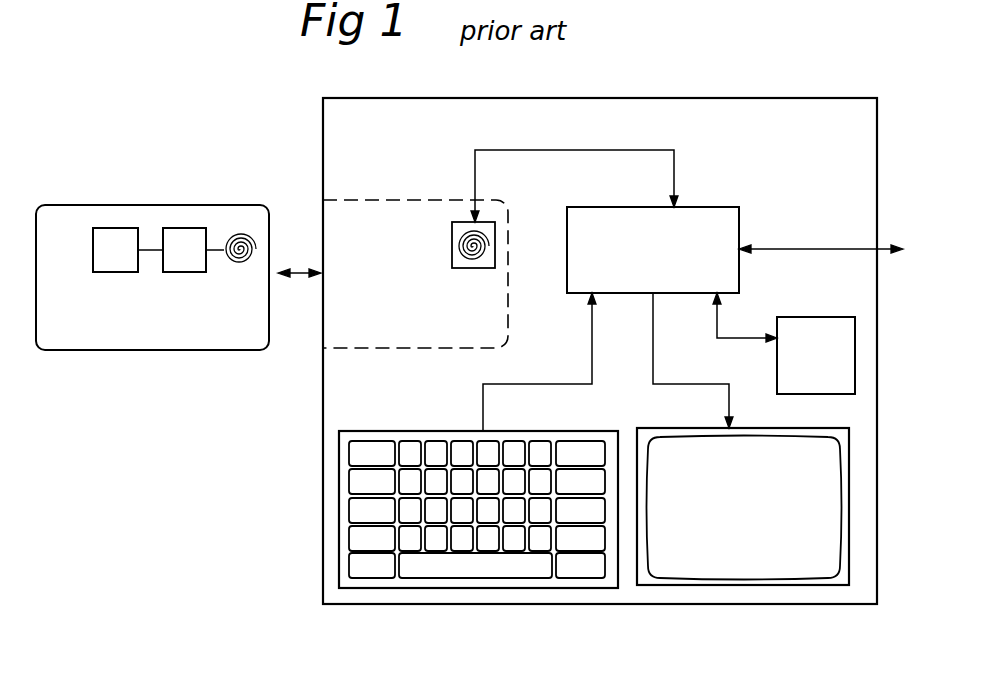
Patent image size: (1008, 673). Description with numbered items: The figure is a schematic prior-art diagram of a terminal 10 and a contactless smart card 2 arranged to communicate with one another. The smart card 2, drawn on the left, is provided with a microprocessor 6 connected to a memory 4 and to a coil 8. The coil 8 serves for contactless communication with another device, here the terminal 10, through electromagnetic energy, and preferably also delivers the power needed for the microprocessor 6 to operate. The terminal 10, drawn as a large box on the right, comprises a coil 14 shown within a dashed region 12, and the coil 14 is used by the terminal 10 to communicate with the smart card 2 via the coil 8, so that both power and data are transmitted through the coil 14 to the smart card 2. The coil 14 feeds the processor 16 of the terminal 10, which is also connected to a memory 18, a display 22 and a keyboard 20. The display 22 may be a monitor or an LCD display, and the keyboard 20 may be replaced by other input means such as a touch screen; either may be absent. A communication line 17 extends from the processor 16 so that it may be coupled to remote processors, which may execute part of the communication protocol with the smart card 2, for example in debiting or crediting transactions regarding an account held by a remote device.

The smart card 2 is at (84, 215).
The memory 4 is at (105, 247).
The microprocessor 6 is at (176, 240).
The coil 8 is at (240, 246).
The terminal 10 is at (375, 150).
The card reader region 12 is at (367, 349).
The coil 14 is at (474, 254).
The processor 16 is at (716, 214).
The communication line 17 is at (808, 251).
The memory 18 is at (811, 338).
The keyboard 20 is at (340, 466).
The display 22 is at (741, 563).